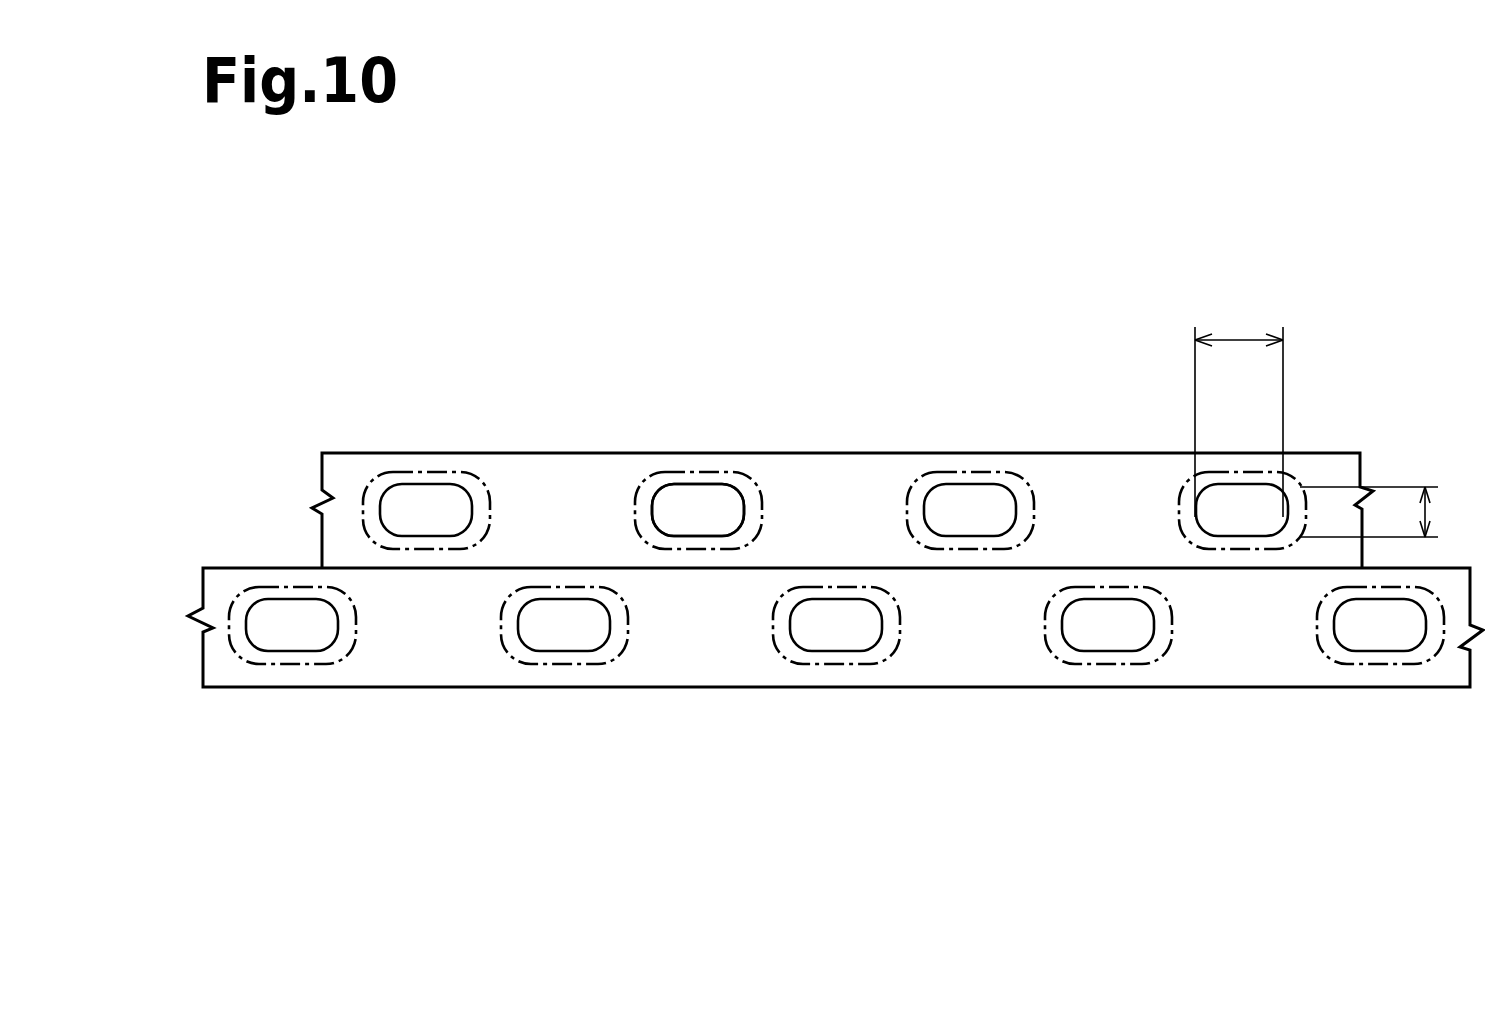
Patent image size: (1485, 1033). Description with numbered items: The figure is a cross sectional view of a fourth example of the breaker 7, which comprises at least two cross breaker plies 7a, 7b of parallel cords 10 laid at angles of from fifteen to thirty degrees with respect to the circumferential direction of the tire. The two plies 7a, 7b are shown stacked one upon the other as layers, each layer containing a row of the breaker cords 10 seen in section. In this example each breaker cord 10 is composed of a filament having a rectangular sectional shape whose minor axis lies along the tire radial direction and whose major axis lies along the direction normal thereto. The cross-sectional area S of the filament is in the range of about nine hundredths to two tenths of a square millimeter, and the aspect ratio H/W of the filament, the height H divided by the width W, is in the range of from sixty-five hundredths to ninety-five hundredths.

The breaker 7 is at (535, 812).
The breaker ply 7a is at (527, 687).
The breaker ply 7b is at (460, 568).
The breaker cord 10 is at (700, 495).
The cross-sectional area S is at (672, 497).
The width of filament W is at (1232, 337).
The height of filament H is at (1427, 513).